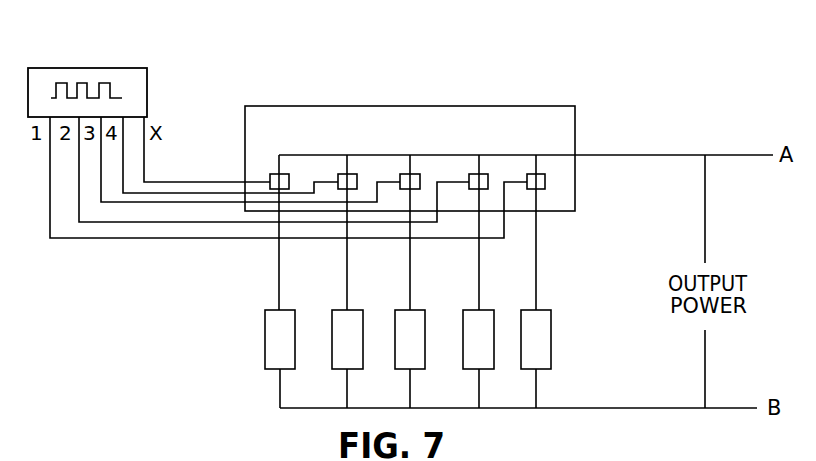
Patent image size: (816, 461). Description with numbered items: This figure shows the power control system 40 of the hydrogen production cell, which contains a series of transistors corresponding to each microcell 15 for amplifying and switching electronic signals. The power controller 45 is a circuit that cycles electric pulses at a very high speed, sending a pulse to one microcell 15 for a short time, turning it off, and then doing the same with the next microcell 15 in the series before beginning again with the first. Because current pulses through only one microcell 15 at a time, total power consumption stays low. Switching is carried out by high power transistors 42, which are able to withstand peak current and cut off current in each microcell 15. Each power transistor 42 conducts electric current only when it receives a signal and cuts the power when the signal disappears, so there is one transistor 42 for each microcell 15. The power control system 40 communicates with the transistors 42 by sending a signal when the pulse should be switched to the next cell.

The power controller 45 is at (50, 68).
The power control system 40 is at (431, 115).
The high power transistor 42 is at (545, 185).
The microcell 15 is at (265, 338).